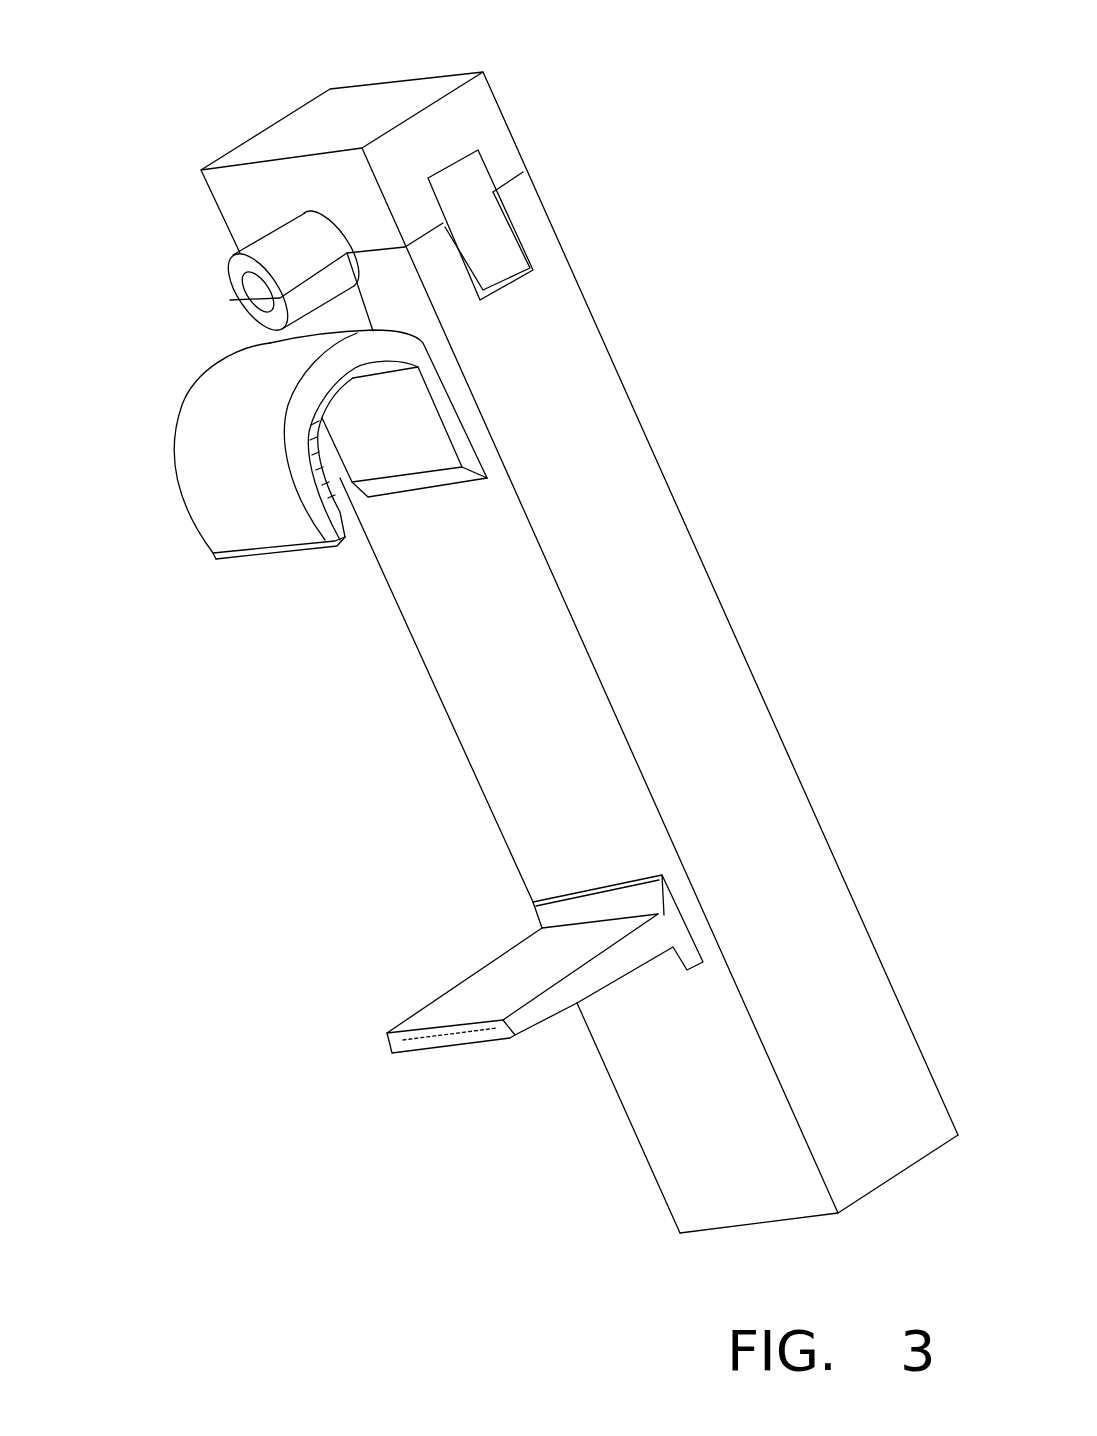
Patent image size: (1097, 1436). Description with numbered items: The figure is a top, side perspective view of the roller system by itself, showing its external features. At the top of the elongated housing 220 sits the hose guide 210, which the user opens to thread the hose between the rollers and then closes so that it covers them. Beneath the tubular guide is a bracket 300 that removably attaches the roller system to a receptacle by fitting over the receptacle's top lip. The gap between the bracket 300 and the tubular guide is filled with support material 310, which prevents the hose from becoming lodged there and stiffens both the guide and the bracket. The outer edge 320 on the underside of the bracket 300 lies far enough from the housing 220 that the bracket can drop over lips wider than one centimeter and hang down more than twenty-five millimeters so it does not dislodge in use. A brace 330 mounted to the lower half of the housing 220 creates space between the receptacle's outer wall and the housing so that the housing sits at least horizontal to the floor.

The hose guide 210 is at (380, 97).
The housing 220 is at (667, 592).
The bracket 300 is at (233, 397).
The support material 310 is at (350, 315).
The outer edge 320 is at (257, 570).
The brace 330 is at (493, 977).